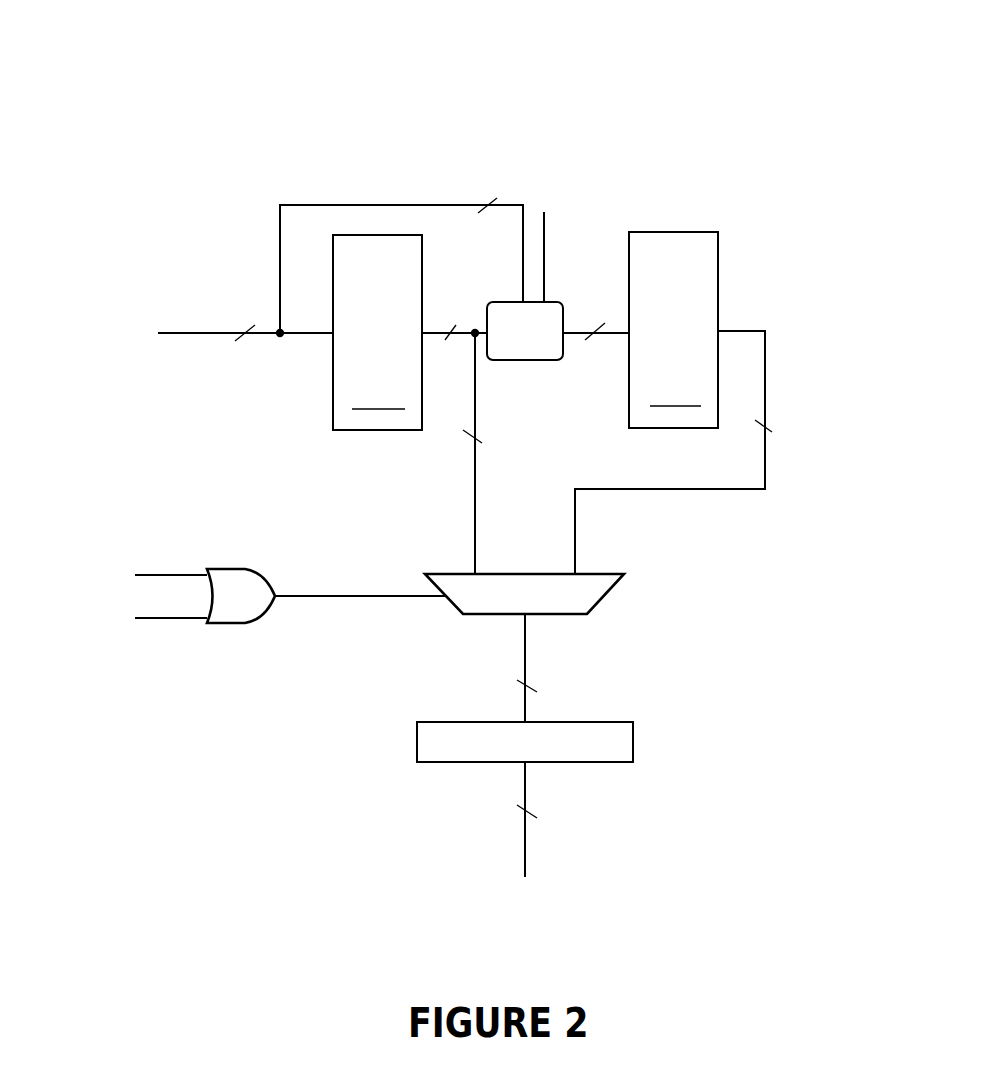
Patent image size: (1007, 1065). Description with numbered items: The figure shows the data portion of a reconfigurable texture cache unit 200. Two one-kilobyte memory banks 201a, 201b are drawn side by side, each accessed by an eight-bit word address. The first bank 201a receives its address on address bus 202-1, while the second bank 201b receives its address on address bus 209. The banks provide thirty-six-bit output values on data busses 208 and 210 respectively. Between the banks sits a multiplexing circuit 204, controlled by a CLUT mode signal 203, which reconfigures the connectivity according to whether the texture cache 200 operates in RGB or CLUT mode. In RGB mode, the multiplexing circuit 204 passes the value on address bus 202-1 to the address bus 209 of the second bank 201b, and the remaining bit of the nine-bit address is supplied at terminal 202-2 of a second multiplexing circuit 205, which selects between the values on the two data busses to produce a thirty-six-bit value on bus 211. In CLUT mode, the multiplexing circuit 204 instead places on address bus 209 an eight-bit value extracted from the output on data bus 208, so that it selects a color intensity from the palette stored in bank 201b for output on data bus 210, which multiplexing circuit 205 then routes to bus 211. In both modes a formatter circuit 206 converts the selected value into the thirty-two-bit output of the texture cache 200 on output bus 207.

The texture cache unit 200 is at (766, 60).
The memory bank 201a is at (422, 252).
The memory bank 201b is at (673, 232).
The address bus 202-1 is at (270, 336).
The terminal 202-2 is at (193, 578).
The CLUT control signal 203 is at (544, 218).
The multiplexing circuit 204 is at (543, 360).
The multiplexing circuit 205 is at (610, 592).
The formatter circuit 206 is at (633, 735).
The output bus 207 is at (527, 848).
The data bus 208 is at (465, 327).
The address bus 209 is at (580, 326).
The data bus 210 is at (767, 465).
The bus 211 is at (527, 630).